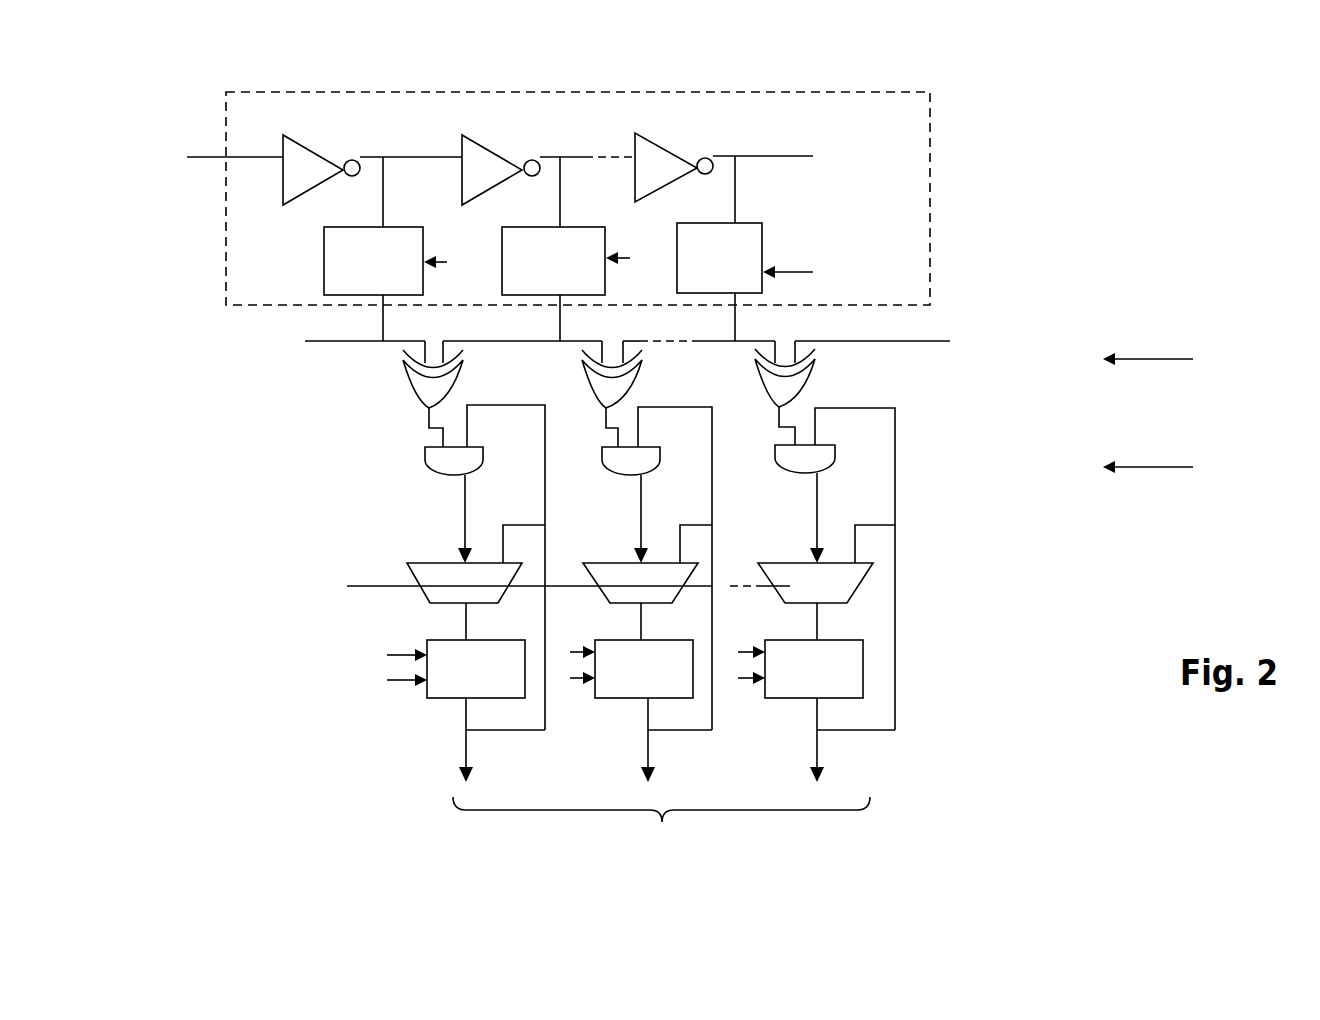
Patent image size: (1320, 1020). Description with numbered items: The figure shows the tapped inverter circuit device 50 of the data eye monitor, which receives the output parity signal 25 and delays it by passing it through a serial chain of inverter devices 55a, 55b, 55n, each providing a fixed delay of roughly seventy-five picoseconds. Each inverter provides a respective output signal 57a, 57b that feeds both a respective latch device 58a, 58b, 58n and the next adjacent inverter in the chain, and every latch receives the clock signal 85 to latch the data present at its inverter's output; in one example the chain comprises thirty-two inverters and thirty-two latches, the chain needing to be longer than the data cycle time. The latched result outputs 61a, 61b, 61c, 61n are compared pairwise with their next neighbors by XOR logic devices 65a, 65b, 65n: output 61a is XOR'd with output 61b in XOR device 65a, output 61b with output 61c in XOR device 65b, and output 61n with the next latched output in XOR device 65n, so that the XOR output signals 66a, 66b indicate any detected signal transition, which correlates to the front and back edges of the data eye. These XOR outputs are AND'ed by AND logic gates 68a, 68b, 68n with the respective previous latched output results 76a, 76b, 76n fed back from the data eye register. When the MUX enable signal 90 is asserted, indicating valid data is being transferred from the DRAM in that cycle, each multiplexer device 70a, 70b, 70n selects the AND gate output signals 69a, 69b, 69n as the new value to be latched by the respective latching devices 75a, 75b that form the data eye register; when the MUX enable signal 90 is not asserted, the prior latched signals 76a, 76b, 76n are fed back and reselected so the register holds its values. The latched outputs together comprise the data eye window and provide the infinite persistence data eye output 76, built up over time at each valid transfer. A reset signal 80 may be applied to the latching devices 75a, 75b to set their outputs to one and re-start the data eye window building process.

The output parity signal 25 is at (198, 158).
The tapped inverter circuit device 50 is at (1060, 55).
The inverter device 55a is at (292, 155).
The inverter device 55b is at (475, 155).
The inverter device 55n is at (657, 168).
The output signal 57a is at (397, 155).
The output signal 57b is at (568, 152).
The latch device 58a is at (343, 277).
The latch device 58b is at (517, 257).
The latch device 58n is at (762, 245).
The latched result output 61a is at (390, 342).
The latched result output 61b is at (477, 342).
The latched result output 61c is at (645, 341).
The latched result output 61n is at (745, 340).
The XOR logic device 65a is at (412, 392).
The XOR logic device 65b is at (580, 365).
The XOR logic device 65n is at (805, 375).
The XOR output signal 66a is at (423, 420).
The XOR output signal 66b is at (603, 432).
The AND logic gate 68a is at (440, 470).
The AND logic gate 68b is at (642, 470).
The AND logic gate 68n is at (803, 467).
The AND gate output signal 69a is at (467, 508).
The AND gate output signal 69b is at (640, 508).
The AND gate output signal 69n is at (817, 505).
The multiplexer device 70a is at (438, 573).
The multiplexer device 70b is at (648, 572).
The multiplexer device 70n is at (817, 572).
The latching device 75a is at (442, 692).
The latching device 75b is at (638, 692).
The data eye output 76 is at (661, 831).
The latched output signal 76a is at (495, 732).
The latched output signal 76b is at (663, 732).
The latched output signal 76n is at (897, 732).
The reset signal 80 is at (1218, 414).
The clock signal 85 is at (1216, 283).
The MUX enable signal 90 is at (363, 585).